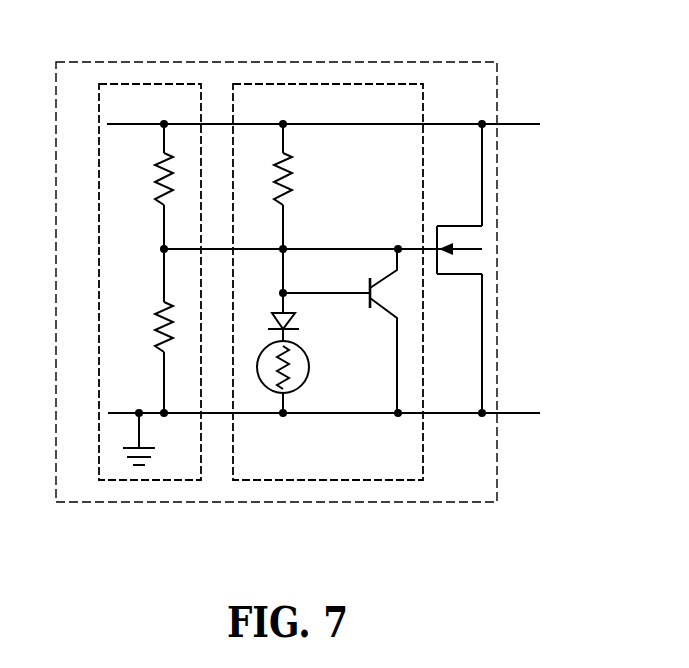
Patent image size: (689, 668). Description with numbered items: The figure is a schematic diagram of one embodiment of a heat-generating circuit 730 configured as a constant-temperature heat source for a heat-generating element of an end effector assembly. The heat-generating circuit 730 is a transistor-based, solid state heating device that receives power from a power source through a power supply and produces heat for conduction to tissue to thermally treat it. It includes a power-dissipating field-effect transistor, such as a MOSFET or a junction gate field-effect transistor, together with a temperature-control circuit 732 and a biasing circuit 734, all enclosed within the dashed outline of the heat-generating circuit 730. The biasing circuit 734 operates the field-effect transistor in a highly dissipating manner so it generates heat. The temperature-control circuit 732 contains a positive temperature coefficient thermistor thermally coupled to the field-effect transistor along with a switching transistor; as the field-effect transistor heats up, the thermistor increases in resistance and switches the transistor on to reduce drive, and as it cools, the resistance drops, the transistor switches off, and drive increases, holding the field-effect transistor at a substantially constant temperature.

The heat-generating circuit 730 is at (438, 63).
The temperature-control circuit 732 is at (386, 481).
The biasing circuit 734 is at (139, 481).